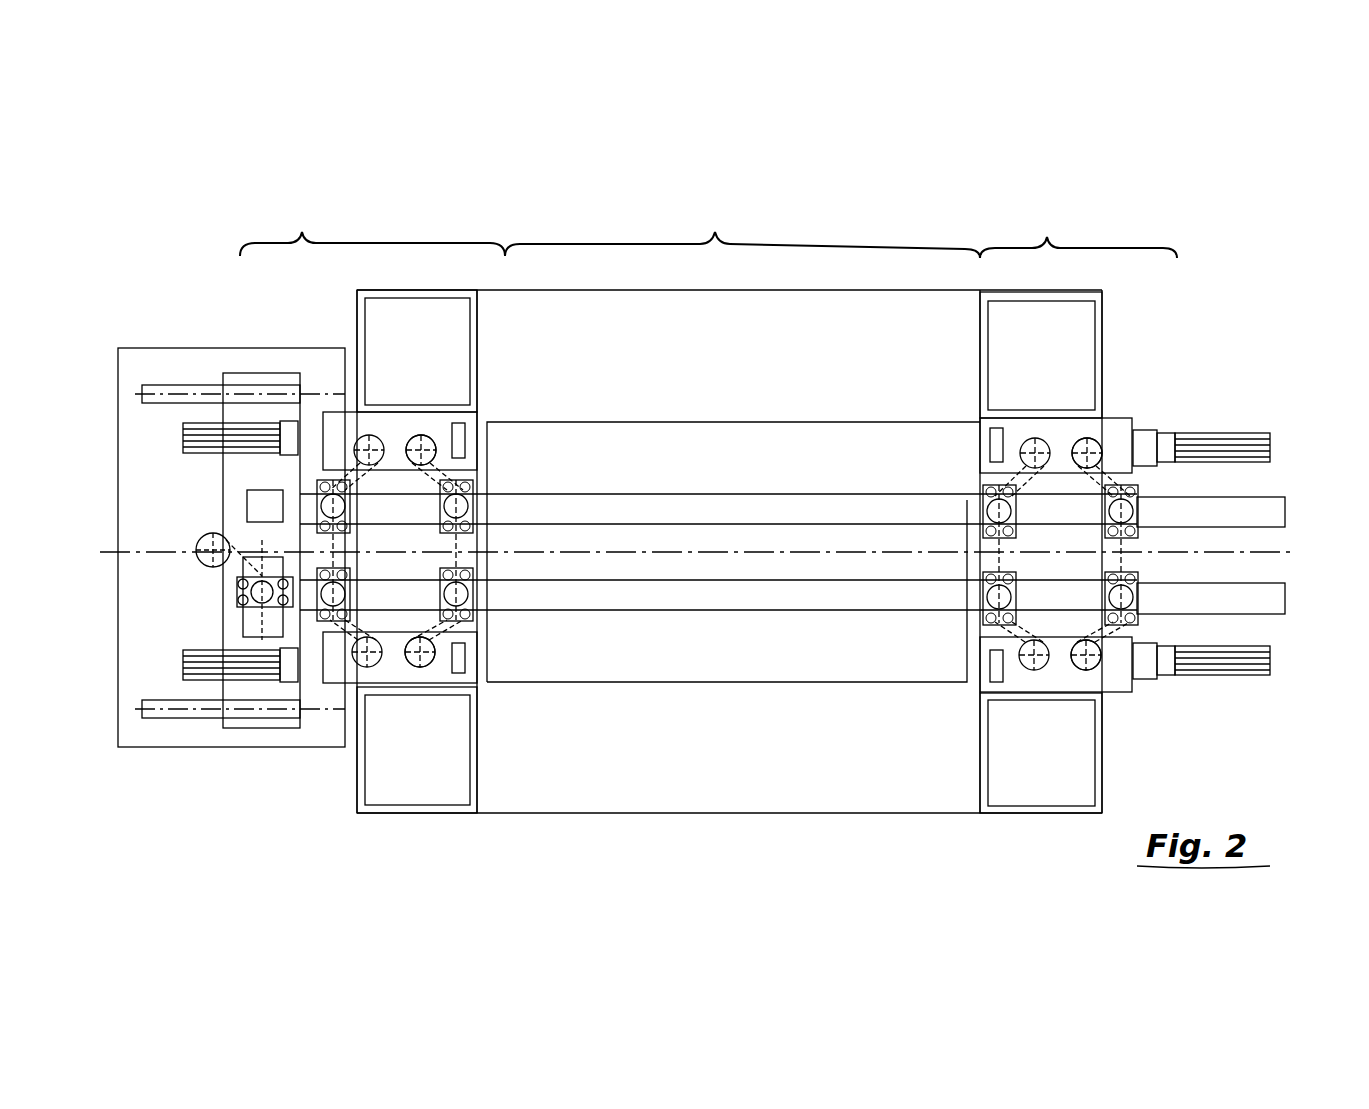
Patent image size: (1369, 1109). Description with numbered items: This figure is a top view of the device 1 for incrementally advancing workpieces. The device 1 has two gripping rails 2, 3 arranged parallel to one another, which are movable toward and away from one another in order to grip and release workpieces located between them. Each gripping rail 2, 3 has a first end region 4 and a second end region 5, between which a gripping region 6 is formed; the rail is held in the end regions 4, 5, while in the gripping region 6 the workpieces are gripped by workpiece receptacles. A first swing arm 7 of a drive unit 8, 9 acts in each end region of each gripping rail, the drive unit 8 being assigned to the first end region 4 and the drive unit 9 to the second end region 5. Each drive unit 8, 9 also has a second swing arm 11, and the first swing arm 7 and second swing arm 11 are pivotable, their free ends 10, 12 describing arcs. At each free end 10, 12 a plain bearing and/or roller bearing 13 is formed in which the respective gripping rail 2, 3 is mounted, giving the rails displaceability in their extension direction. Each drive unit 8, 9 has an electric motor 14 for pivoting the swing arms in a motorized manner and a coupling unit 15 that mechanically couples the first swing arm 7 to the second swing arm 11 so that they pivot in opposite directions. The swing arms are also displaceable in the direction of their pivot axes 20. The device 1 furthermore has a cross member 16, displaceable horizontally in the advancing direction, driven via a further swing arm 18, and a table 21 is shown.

The device 1 is at (1197, 334).
The gripping rail 2 is at (1265, 608).
The gripping rail 3 is at (1263, 503).
The first end region 4 is at (372, 225).
The second end region 5 is at (1078, 227).
The gripping region 6 is at (742, 229).
The first swing arm 7 is at (347, 457).
The drive unit 8 is at (314, 394).
The drive unit 9 is at (1231, 368).
The free end 10 is at (327, 497).
The second swing arm 11 is at (463, 502).
The free end 12 is at (470, 527).
The plain bearing and/or roller bearing 13 is at (318, 533).
The electric motor 14 is at (193, 433).
The coupling unit 15 is at (428, 446).
The cross member 16 is at (233, 468).
The further swing arm 18 is at (232, 568).
The pivot axis 20 is at (378, 447).
The table 21 is at (690, 658).